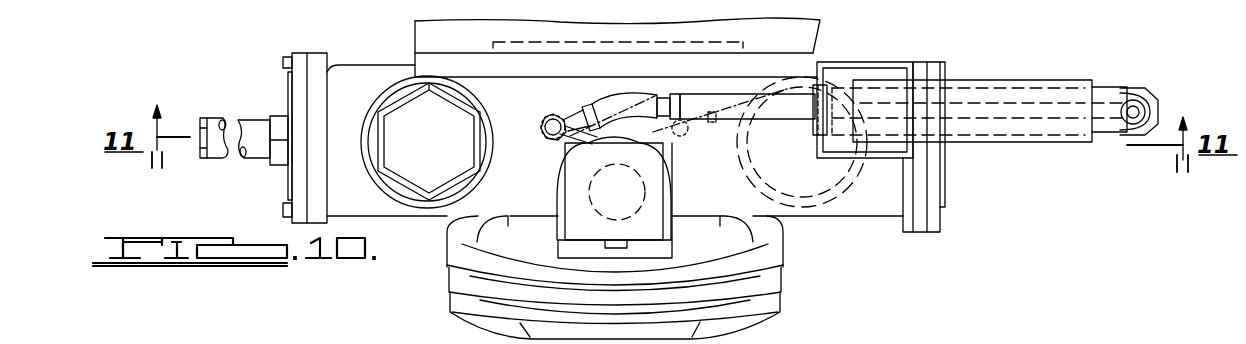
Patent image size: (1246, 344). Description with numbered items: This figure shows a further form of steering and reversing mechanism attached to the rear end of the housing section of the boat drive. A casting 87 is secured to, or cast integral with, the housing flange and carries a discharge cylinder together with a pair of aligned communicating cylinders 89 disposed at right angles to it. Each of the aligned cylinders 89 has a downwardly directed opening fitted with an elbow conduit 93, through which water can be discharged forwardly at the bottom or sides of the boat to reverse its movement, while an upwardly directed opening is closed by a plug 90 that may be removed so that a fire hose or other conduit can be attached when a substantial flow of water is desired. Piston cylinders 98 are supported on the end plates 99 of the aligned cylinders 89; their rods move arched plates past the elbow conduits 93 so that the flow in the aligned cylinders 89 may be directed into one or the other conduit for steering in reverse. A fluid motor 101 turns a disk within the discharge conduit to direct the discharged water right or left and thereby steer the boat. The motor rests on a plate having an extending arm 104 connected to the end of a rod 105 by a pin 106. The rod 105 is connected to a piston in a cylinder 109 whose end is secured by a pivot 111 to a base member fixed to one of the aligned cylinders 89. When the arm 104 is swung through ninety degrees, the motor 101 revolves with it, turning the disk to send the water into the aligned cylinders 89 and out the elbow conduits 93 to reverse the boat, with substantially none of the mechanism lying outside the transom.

The casting 87 is at (812, 70).
The aligned communicating cylinders 89 is at (344, 63).
The plug 90 is at (452, 141).
The elbow conduits 93 is at (835, 193).
The cylinders 98 is at (232, 98).
The end plates 99 is at (288, 80).
The fluid motor 101 is at (655, 192).
The extending arm 104 is at (563, 139).
The rod 105 is at (697, 94).
The pin 106 is at (558, 114).
The cylinder 109 is at (1002, 80).
The pivot 111 is at (1130, 125).